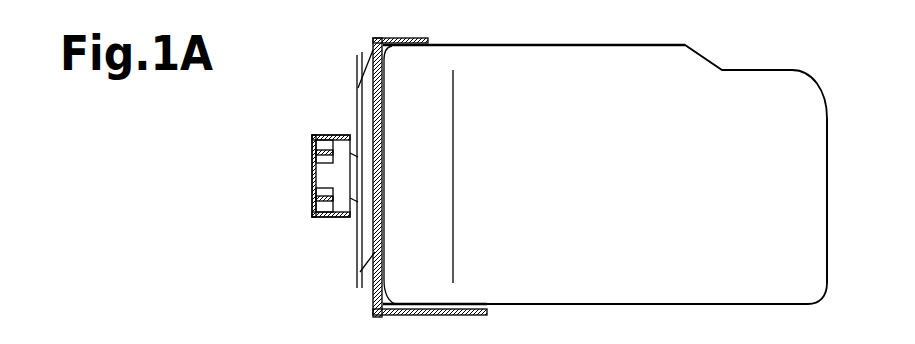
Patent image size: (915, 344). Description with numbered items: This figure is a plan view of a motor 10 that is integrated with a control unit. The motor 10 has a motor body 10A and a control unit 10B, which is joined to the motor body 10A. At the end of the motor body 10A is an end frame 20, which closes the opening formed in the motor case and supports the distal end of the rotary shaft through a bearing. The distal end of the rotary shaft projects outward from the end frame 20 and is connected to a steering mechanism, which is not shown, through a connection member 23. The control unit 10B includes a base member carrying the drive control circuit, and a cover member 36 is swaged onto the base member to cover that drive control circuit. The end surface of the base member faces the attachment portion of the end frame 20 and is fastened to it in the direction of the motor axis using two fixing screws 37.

The motor 10 is at (793, 54).
The motor body 10A is at (357, 82).
The control unit 10B is at (649, 45).
The end frame 20 is at (362, 237).
The connection member 23 is at (322, 136).
The cover member 36 is at (828, 178).
The fixing screws 37 is at (368, 52).